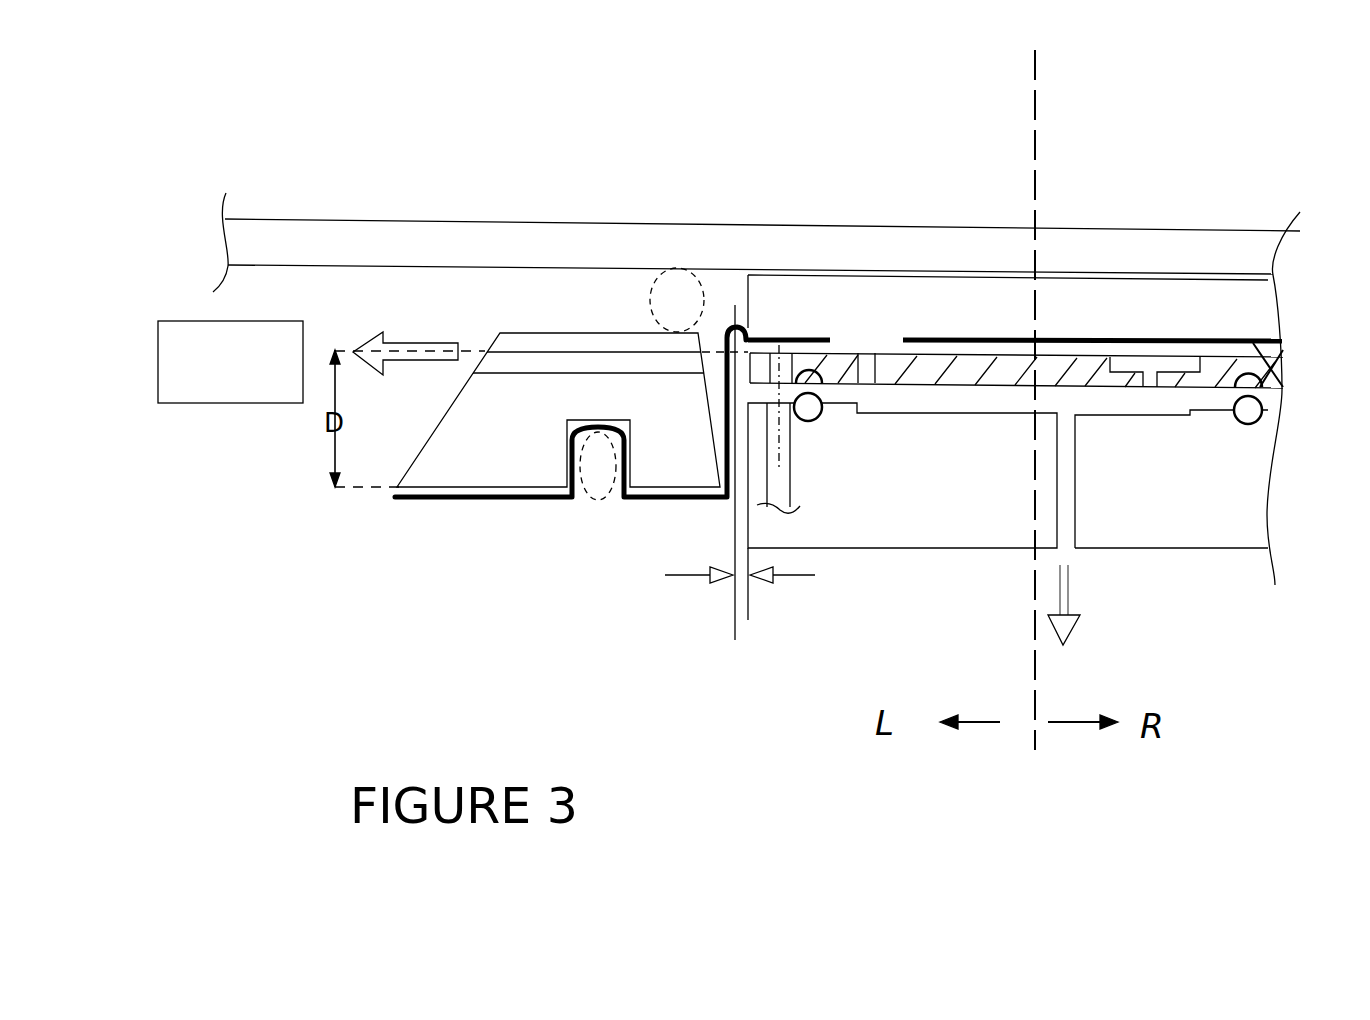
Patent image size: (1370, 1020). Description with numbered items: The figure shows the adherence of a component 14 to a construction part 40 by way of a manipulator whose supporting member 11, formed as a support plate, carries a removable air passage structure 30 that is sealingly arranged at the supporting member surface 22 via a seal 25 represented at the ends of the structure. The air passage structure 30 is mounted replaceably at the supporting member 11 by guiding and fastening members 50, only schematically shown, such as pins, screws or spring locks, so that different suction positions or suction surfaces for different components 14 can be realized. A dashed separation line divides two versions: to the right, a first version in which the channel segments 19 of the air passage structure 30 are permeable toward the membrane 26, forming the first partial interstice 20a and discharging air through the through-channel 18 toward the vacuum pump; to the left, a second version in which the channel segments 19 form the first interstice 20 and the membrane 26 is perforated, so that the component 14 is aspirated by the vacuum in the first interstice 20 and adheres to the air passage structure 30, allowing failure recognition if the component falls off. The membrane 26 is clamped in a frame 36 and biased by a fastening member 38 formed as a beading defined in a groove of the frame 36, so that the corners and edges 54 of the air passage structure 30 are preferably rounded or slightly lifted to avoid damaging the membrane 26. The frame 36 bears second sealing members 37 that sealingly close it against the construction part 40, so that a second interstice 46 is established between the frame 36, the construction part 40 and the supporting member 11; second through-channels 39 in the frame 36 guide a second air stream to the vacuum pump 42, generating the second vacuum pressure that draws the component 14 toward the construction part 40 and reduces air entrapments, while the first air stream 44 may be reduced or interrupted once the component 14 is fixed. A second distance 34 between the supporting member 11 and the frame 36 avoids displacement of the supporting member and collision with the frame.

The supporting member 11 is at (895, 441).
The component 14 is at (1180, 305).
The through-channel 18 is at (1068, 523).
The channel segments 19 is at (863, 367).
The first interstice 20 is at (868, 340).
The first partial interstice 20a is at (1150, 365).
The supporting member surface 22 is at (927, 413).
The seal 25 is at (813, 418).
The membrane 26 is at (1282, 392).
The air passage structure 30 is at (988, 368).
The second distance 34 is at (743, 598).
The frame 36 is at (512, 456).
The second sealing members 37 is at (650, 260).
The fastening member 38 is at (606, 526).
The second through-channels 39 is at (496, 394).
The construction part 40 is at (825, 243).
The vacuum pump 42 is at (203, 377).
The first air stream 44 is at (1068, 598).
The second interstice 46 is at (723, 303).
The pin 50 is at (780, 453).
The corners and edges 54 is at (757, 347).